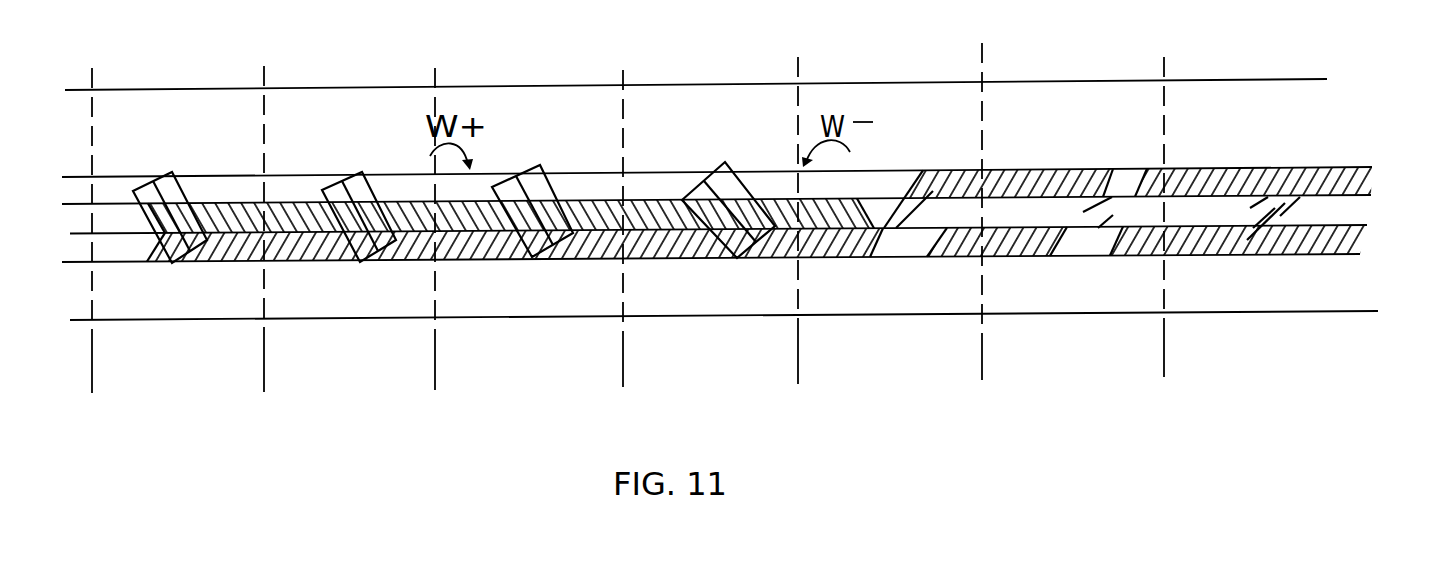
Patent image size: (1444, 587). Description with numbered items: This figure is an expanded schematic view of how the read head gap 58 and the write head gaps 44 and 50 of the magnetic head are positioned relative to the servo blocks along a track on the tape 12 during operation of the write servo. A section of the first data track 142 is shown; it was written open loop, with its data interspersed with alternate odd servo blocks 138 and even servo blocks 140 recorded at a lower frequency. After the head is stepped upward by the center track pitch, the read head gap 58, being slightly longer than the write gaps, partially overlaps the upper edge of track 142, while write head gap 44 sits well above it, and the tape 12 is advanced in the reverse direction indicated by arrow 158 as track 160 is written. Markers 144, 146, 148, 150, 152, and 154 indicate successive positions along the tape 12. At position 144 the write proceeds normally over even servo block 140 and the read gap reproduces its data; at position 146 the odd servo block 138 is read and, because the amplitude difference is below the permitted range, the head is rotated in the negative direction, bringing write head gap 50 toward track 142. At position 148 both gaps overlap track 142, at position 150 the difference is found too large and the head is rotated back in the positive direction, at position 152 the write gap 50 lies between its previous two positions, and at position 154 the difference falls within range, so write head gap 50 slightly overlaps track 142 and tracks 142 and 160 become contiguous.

The tape 12 is at (1228, 76).
The write head gap 44 is at (190, 198).
The write head gap 50 is at (148, 204).
The read head gap 58 is at (166, 190).
The odd servo block 138 is at (912, 262).
The even servo block 140 is at (1095, 258).
The track 142 is at (747, 245).
The position 144 is at (1164, 348).
The position 146 is at (982, 349).
The position 148 is at (798, 350).
The position 150 is at (623, 352).
The position 152 is at (435, 353).
The position 154 is at (264, 354).
The arrow 158 is at (982, 54).
The track 160 is at (747, 200).